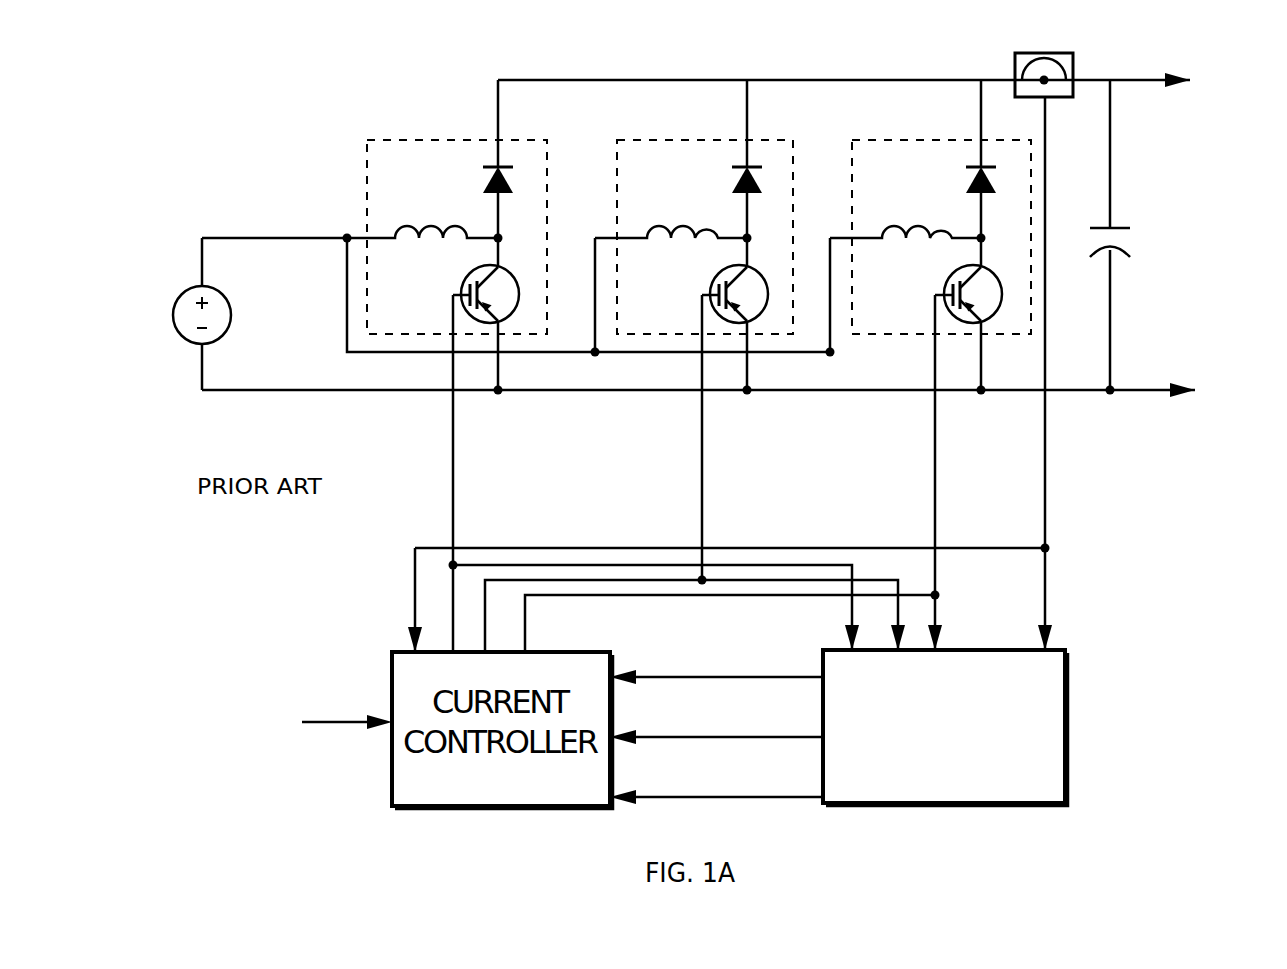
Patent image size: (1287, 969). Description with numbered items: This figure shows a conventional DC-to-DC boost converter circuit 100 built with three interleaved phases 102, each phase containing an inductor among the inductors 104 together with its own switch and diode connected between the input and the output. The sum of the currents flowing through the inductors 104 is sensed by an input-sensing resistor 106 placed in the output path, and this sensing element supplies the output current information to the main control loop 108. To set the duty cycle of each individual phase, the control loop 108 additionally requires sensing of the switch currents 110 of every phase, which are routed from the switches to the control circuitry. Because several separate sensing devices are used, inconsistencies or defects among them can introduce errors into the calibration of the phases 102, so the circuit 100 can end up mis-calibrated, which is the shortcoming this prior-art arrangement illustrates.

The DC-to-DC boost converter circuit 100 is at (152, 83).
The interleaved phases 102 is at (432, 140).
The inductors 104 is at (433, 224).
The input-sensing resistor 106 is at (1030, 53).
The main control loop 108 is at (1112, 655).
The switch currents 110 is at (813, 595).